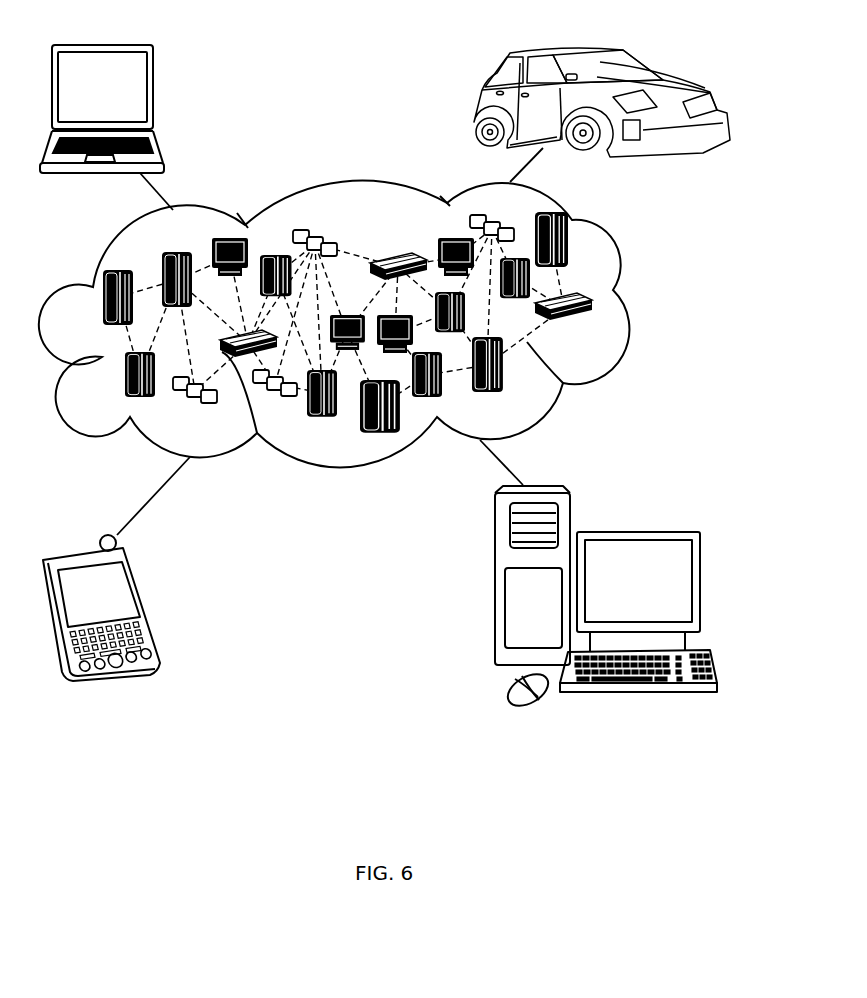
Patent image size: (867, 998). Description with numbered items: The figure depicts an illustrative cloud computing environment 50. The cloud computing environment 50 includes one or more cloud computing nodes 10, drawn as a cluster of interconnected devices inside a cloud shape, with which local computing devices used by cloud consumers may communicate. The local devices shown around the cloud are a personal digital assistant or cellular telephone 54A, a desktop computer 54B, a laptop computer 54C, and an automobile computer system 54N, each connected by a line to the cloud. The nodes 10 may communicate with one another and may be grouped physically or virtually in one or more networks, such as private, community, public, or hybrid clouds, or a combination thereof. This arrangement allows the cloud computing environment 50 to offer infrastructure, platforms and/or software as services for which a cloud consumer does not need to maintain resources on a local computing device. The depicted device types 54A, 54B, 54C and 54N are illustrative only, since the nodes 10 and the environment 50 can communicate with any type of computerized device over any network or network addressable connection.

The personal digital assistant (PDA) or cellular telephone 54A is at (145, 606).
The desktop computer 54B is at (635, 532).
The laptop computer 54C is at (152, 94).
The automobile computer system 54N is at (477, 107).
The cloud computing environment 50 is at (360, 324).
The cloud computing node 10 is at (656, 298).